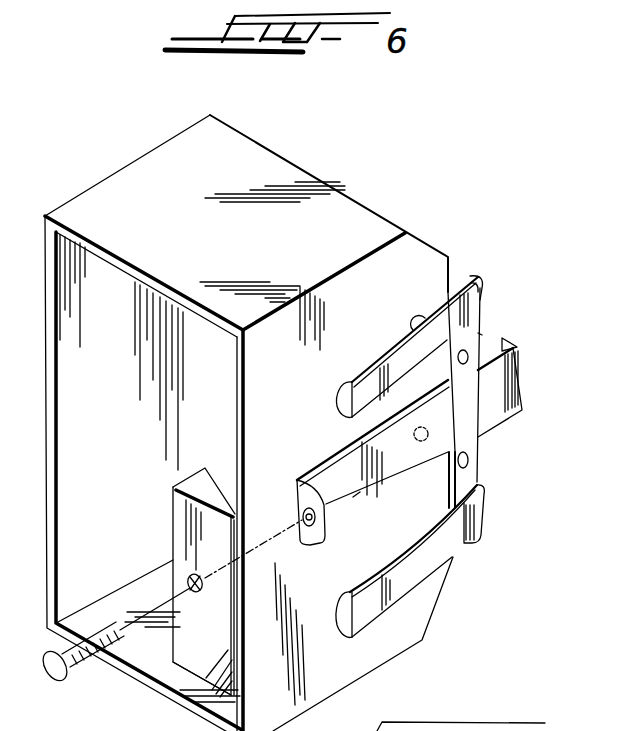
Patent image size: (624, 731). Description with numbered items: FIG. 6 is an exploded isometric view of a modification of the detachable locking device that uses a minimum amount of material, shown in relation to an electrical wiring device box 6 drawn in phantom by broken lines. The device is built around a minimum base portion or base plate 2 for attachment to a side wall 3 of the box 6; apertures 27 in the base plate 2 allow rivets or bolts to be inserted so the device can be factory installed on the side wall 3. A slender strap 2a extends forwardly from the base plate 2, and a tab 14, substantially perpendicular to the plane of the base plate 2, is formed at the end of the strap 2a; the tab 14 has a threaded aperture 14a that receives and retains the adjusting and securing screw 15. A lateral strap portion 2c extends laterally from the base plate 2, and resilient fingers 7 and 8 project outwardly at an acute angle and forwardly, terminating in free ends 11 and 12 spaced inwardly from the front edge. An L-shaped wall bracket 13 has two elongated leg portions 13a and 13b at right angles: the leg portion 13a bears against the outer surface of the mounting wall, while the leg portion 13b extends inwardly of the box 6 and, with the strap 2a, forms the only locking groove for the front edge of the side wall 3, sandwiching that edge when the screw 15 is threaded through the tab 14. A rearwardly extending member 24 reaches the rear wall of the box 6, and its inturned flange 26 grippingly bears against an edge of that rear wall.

The base plate 2 is at (447, 432).
The slender strap 2a is at (353, 497).
The lateral strap portion 2c is at (478, 468).
The side wall 3 is at (423, 240).
The electrical wiring device box 6 is at (117, 187).
The resilient finger 7 is at (408, 577).
The resilient finger 8 is at (407, 367).
The free end 11 is at (347, 618).
The free end 12 is at (343, 393).
The wall bracket 13 is at (178, 575).
The elongated leg portion 13a is at (193, 656).
The elongated leg portion 13b is at (197, 482).
The tab 14 is at (300, 531).
The threaded aperture 14a is at (305, 508).
The adjusting and securing screw 15 is at (43, 656).
The rearwardly extending member 24 is at (507, 367).
The inturned flange 26 is at (477, 337).
The apertures 27 is at (462, 366).